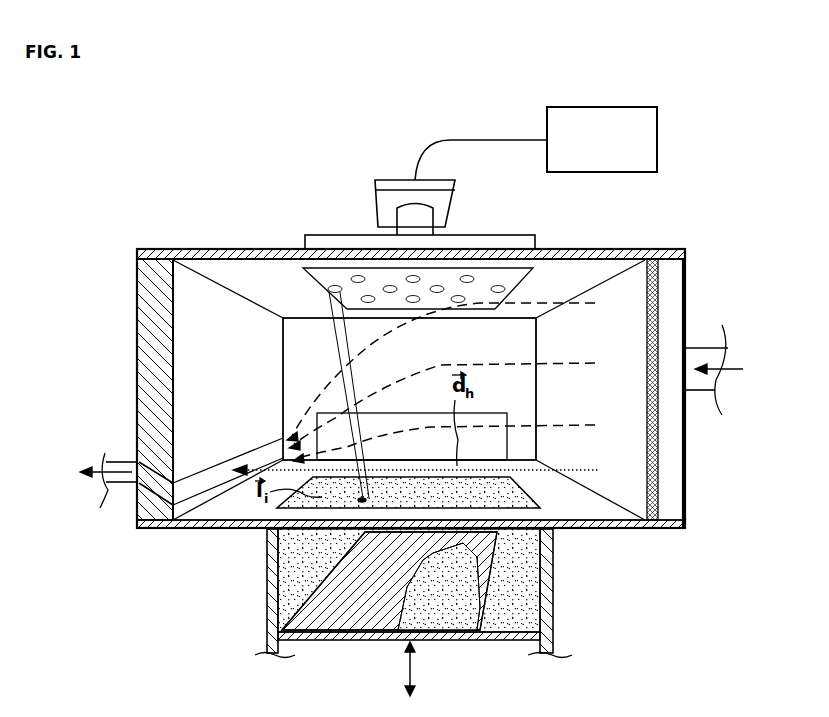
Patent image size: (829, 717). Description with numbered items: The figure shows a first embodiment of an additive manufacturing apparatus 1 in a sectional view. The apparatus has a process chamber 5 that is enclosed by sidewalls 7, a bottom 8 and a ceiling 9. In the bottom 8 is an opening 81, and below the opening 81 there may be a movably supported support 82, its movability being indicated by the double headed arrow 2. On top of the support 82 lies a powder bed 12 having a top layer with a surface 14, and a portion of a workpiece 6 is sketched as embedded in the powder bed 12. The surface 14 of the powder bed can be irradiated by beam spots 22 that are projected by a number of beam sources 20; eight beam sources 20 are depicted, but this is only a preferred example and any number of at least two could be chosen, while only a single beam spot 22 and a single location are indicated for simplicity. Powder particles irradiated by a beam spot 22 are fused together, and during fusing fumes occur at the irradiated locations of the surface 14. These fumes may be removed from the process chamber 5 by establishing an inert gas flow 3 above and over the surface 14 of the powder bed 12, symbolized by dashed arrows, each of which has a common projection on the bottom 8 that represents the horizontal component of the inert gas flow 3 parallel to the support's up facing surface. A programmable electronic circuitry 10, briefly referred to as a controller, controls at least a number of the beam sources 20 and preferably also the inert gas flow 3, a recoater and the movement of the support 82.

The additive manufacturing apparatus 1 is at (190, 194).
The double headed arrow 2 is at (411, 671).
The inert gas flow 3 is at (564, 362).
The process chamber 5 is at (278, 278).
The workpiece 6 is at (327, 608).
The sidewalls 7 is at (158, 398).
The bottom 8 is at (246, 519).
The ceiling 9 is at (290, 250).
The programmable electronic circuitry 10 is at (657, 140).
The powder bed 12 is at (280, 563).
The surface 14 is at (325, 490).
The beam sources 20 is at (329, 292).
The beam spots 22 is at (360, 500).
The opening 81 is at (540, 503).
The support 82 is at (361, 641).